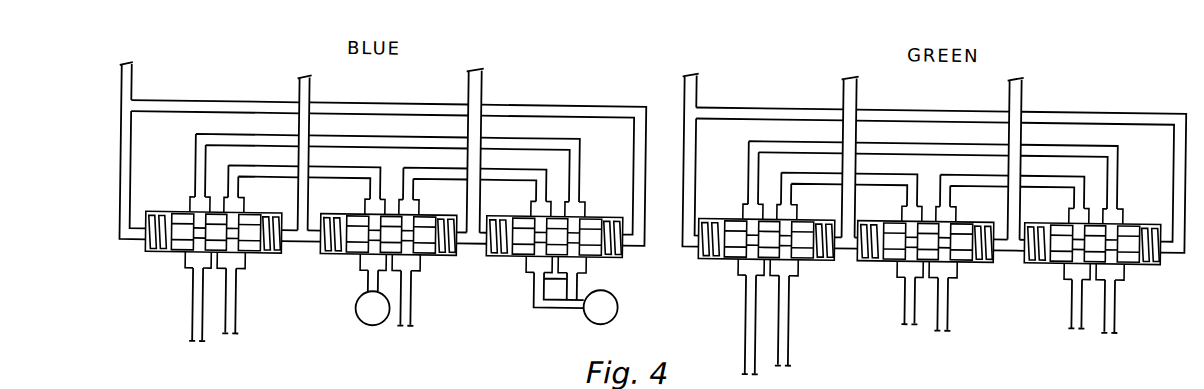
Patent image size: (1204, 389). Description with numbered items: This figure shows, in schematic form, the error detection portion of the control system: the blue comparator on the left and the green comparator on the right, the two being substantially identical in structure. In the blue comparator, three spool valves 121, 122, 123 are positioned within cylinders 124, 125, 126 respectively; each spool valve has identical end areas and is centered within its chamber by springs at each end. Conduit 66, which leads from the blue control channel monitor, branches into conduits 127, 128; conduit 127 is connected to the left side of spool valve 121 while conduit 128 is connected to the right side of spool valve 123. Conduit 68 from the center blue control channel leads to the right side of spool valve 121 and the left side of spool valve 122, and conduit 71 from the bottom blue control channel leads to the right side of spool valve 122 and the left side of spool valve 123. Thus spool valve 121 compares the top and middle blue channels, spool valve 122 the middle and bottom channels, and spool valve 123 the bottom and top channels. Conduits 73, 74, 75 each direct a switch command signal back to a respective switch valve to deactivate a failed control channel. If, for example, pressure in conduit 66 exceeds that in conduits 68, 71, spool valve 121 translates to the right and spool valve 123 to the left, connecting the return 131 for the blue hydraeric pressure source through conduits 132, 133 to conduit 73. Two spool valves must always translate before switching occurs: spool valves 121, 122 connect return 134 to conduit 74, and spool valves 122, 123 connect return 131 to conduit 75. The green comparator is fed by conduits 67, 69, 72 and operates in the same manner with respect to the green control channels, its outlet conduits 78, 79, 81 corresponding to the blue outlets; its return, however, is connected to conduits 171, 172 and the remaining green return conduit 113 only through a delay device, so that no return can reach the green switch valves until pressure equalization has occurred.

The conduit 66 is at (131, 76).
The conduit 127 is at (120, 150).
The conduit 68 is at (309, 90).
The conduit 71 is at (481, 90).
The conduit 128 is at (182, 101).
The conduit 133 is at (562, 134).
The cylinder 124 is at (148, 255).
The spool valve 121 is at (180, 252).
The cylinder 125 is at (334, 252).
The spool valve 122 is at (350, 268).
The cylinder 126 is at (496, 258).
The spool valve 123 is at (518, 266).
The conduit 73 is at (194, 302).
The conduit 74 is at (238, 308).
The return 134 is at (372, 324).
The conduit 75 is at (413, 304).
The return 131 is at (590, 313).
The conduit 132 is at (578, 282).
The conduit 67 is at (696, 81).
The conduit 69 is at (856, 80).
The conduit 72 is at (1021, 78).
The outlet pipe 78 is at (745, 310).
The outlet pipe 79 is at (789, 313).
The conduit 171 is at (906, 310).
The outlet pipe 81 is at (950, 296).
The conduit 172 is at (1073, 310).
The outlet pipe 113 is at (1114, 309).